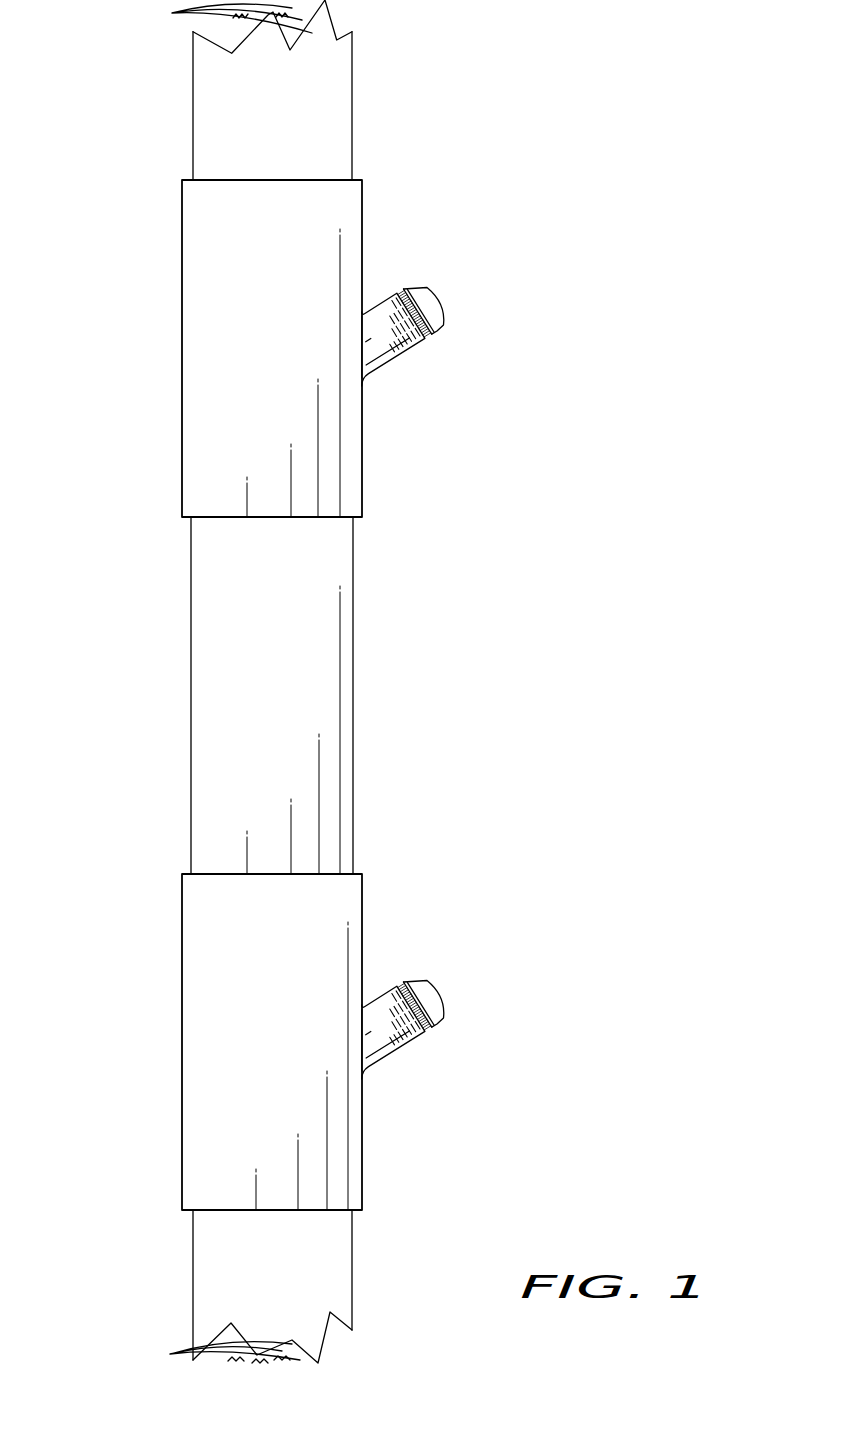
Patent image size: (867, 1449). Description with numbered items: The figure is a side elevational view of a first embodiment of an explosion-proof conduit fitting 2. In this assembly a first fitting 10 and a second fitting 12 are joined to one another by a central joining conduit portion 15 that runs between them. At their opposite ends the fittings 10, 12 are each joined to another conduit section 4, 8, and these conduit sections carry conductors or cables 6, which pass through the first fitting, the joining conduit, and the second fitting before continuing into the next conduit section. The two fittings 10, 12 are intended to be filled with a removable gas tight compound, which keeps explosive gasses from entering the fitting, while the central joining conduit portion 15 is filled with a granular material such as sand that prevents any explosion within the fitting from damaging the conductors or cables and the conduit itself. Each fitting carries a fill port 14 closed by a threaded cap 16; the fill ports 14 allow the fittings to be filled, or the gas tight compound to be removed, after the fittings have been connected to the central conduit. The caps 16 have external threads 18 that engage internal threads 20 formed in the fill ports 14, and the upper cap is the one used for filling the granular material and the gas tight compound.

The explosion-proof conduit fitting 2 is at (528, 102).
The conduit section 4 is at (198, 72).
The conductors or cables 6 is at (230, 687).
The conduit section 8 is at (200, 1266).
The first fitting 10 is at (190, 362).
The second fitting 12 is at (192, 1042).
The fill port 14 is at (402, 362).
The central joining conduit portion 15 is at (203, 706).
The threaded cap 16 is at (446, 322).
The external threads 18 is at (404, 289).
The internal threads 20 is at (387, 315).